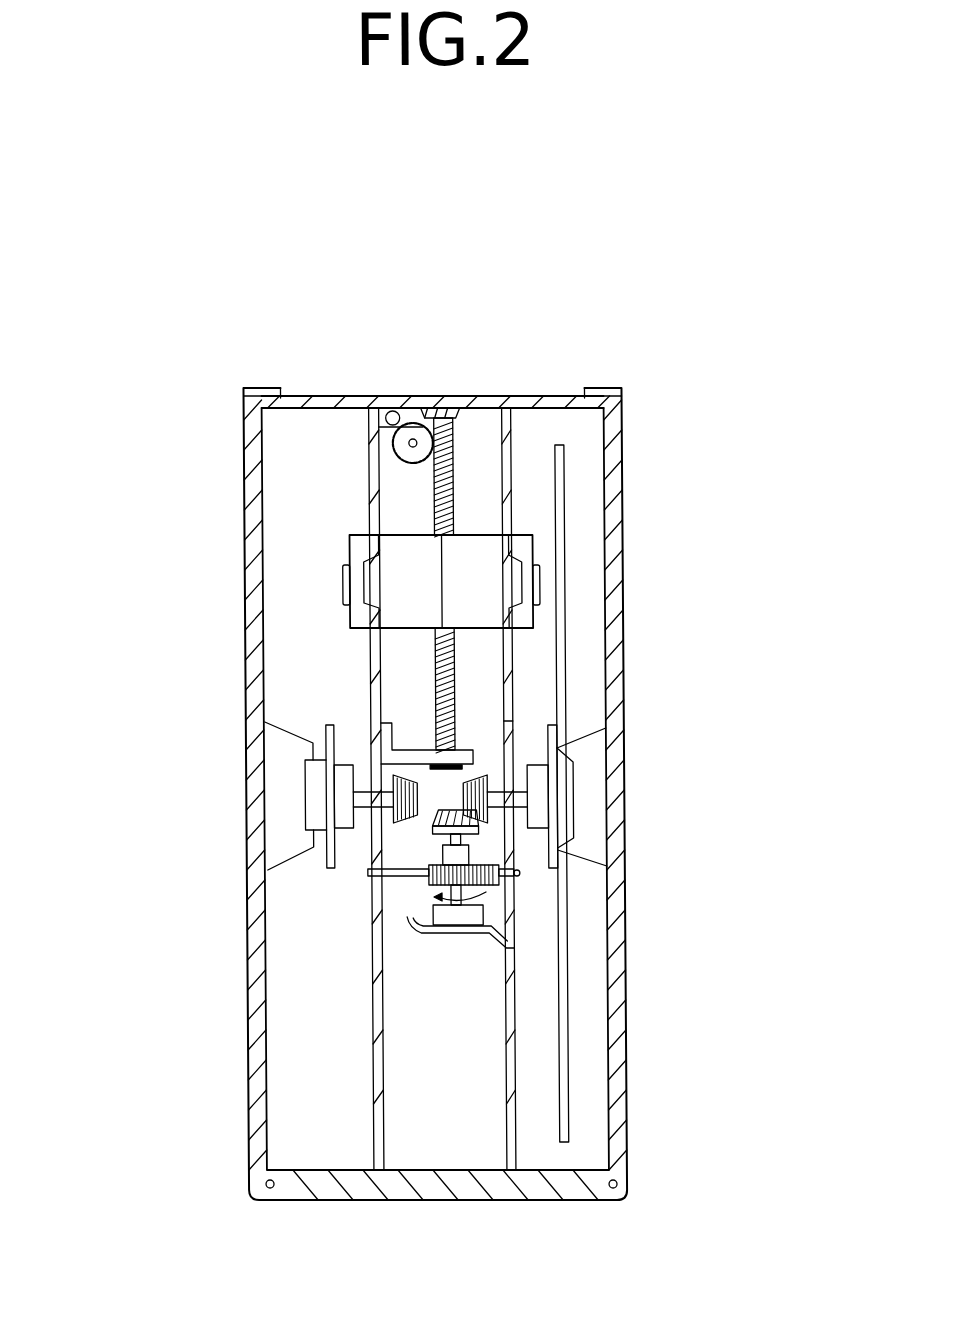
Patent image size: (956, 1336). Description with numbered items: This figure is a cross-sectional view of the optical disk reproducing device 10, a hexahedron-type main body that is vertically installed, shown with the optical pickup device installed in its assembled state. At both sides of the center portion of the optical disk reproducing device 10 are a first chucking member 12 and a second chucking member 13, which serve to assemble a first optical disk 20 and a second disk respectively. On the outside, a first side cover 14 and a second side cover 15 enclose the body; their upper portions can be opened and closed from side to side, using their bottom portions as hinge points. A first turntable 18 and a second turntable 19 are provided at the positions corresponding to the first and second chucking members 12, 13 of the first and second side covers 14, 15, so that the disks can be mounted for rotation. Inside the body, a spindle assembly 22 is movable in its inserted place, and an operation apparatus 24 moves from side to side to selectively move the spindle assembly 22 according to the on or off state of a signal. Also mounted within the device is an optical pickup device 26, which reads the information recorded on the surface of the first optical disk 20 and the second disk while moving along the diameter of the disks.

The optical disk reproducing device 10 is at (437, 693).
The first chucking member 12 is at (588, 847).
The second chucking member 13 is at (283, 793).
The first side cover 14 is at (613, 780).
The second side cover 15 is at (257, 833).
The first turntable 18 is at (567, 783).
The second turntable 19 is at (317, 782).
The first optical disk 20 is at (567, 1080).
The spindle assembly 22 is at (345, 722).
The operation apparatus 24 is at (398, 900).
The optical pickup device 26 is at (483, 572).